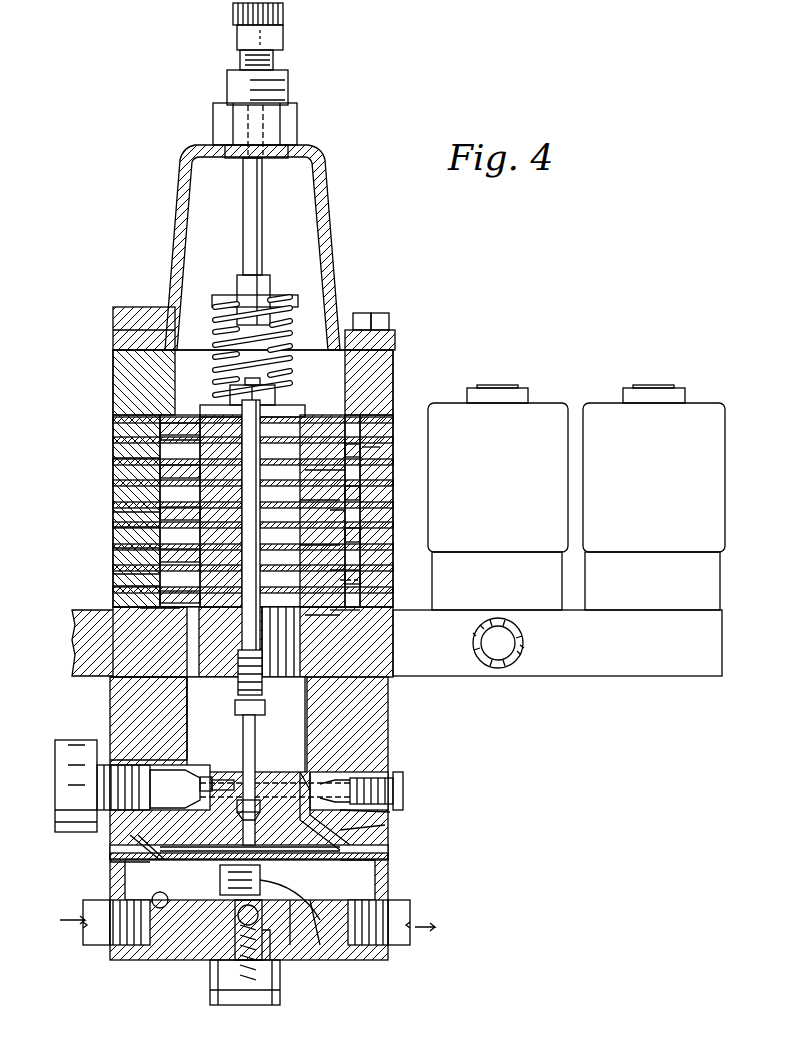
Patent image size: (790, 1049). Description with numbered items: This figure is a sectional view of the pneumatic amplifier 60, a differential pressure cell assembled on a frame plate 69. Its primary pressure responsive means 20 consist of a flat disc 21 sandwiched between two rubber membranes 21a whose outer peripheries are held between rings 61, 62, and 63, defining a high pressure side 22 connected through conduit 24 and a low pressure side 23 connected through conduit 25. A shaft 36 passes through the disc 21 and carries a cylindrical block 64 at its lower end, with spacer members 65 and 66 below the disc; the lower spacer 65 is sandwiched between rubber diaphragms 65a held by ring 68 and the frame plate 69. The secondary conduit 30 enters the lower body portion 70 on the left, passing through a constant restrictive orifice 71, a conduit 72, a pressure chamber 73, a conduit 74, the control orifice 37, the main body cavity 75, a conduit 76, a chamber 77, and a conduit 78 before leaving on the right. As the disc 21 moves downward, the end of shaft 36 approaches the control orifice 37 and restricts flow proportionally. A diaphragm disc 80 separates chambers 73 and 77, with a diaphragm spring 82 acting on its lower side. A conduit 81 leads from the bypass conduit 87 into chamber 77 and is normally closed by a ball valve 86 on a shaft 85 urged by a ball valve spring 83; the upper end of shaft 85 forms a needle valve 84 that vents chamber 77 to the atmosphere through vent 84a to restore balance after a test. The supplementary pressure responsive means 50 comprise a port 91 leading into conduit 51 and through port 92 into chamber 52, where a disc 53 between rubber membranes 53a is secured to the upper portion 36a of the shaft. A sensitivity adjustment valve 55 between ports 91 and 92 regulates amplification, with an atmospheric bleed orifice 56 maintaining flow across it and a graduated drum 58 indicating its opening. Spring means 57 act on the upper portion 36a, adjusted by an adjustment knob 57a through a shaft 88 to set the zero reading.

The primary pressure responsive means 20 is at (345, 548).
The pressure responsive member 21 is at (113, 573).
The rubber membranes 21a is at (345, 572).
The high pressure side 22 is at (345, 500).
The low pressure side 23 is at (157, 620).
The conduit 24 is at (113, 531).
The conduit 25 is at (360, 582).
The secondary conduit 30 is at (100, 905).
The shaft 36 is at (245, 625).
The upper portion of the shaft 36a is at (292, 410).
The control orifice 37 is at (235, 707).
The supplementary pressure responsive means 50 is at (408, 400).
The conduit 51 is at (220, 780).
The chamber 52 is at (160, 440).
The disc 53 is at (350, 470).
The rubber membranes 53a is at (113, 458).
The sensitivity adjustment valve 55 is at (190, 770).
The atmospheric bleed orifice 56 is at (403, 786).
The spring means 57 is at (290, 325).
The adjustment knob 57a is at (233, 12).
The drum 58 is at (55, 780).
The pneumatic amplifier 60 is at (378, 960).
The ring 61 is at (113, 588).
The ring 62 is at (113, 548).
The ring 63 is at (115, 512).
The cylindrical block 64 is at (205, 680).
The spacer member 65 is at (279, 649).
The rubber diaphragms 65a is at (350, 620).
The spacer member 66 is at (326, 634).
The ring 68 is at (165, 612).
The frame plate 69 is at (80, 620).
The lower body portion 70 is at (395, 832).
The constant restrictive orifice 71 is at (155, 955).
The conduit 72 is at (130, 850).
The pressure chamber 73 is at (345, 850).
The conduit 74 is at (258, 827).
The main body cavity 75 is at (290, 724).
The conduit 76 is at (302, 778).
The chamber 77 is at (318, 930).
The conduit 78 is at (305, 945).
The diaphragm disc 80 is at (345, 862).
The conduit 81 is at (290, 915).
The diaphragm spring 82 is at (220, 886).
The ball valve spring 83 is at (248, 985).
The needle valve 84 is at (238, 905).
The vent 84a is at (110, 865).
The shaft 85 is at (268, 950).
The ball valve 86 is at (244, 975).
The bypass conduit 87 is at (228, 940).
The shaft 88 is at (262, 186).
The port 91 is at (205, 777).
The port 92 is at (372, 452).